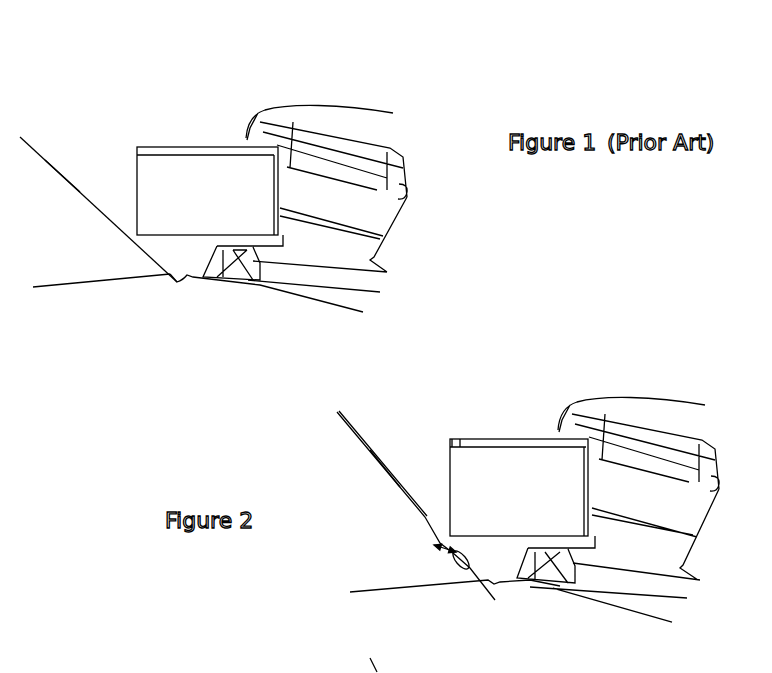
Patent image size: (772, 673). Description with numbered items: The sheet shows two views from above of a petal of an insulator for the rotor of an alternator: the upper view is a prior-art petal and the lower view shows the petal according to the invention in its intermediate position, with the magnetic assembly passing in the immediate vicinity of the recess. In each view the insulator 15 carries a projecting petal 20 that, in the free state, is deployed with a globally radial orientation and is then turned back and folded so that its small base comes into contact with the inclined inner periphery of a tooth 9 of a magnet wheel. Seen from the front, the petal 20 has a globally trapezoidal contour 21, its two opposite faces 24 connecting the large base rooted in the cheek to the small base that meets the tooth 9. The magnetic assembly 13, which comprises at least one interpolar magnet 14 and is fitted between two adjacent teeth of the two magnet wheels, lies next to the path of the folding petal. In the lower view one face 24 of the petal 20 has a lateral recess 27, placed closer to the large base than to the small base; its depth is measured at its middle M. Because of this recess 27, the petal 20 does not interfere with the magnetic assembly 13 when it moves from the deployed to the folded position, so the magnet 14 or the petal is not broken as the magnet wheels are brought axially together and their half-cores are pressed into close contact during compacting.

In FIG. 1, the tooth 9 is at (273, 86).
In FIG. 2, the tooth 9 is at (597, 371).
In FIG. 1, the magnetic assembly 13 is at (192, 244).
In FIG. 2, the magnetic assembly 13 is at (522, 535).
In FIG. 1, the interpolar magnet 14 is at (170, 222).
In FIG. 2, the interpolar magnet 14 is at (563, 510).
In FIG. 1, the insulator 15 is at (77, 160).
In FIG. 2, the insulator 15 is at (401, 449).
In FIG. 1, the petal 20 is at (73, 227).
In FIG. 2, the petal 20 is at (378, 503).
In FIG. 1, the trapezoidal contour 21 is at (98, 156).
In FIG. 2, the trapezoidal contour 21 is at (429, 491).
In FIG. 1, the face 24 is at (30, 143).
In FIG. 2, the face 24 is at (402, 478).
In FIG. 2, the lateral recess 27 is at (477, 575).
In FIG. 2, the middle of the recess M is at (434, 547).